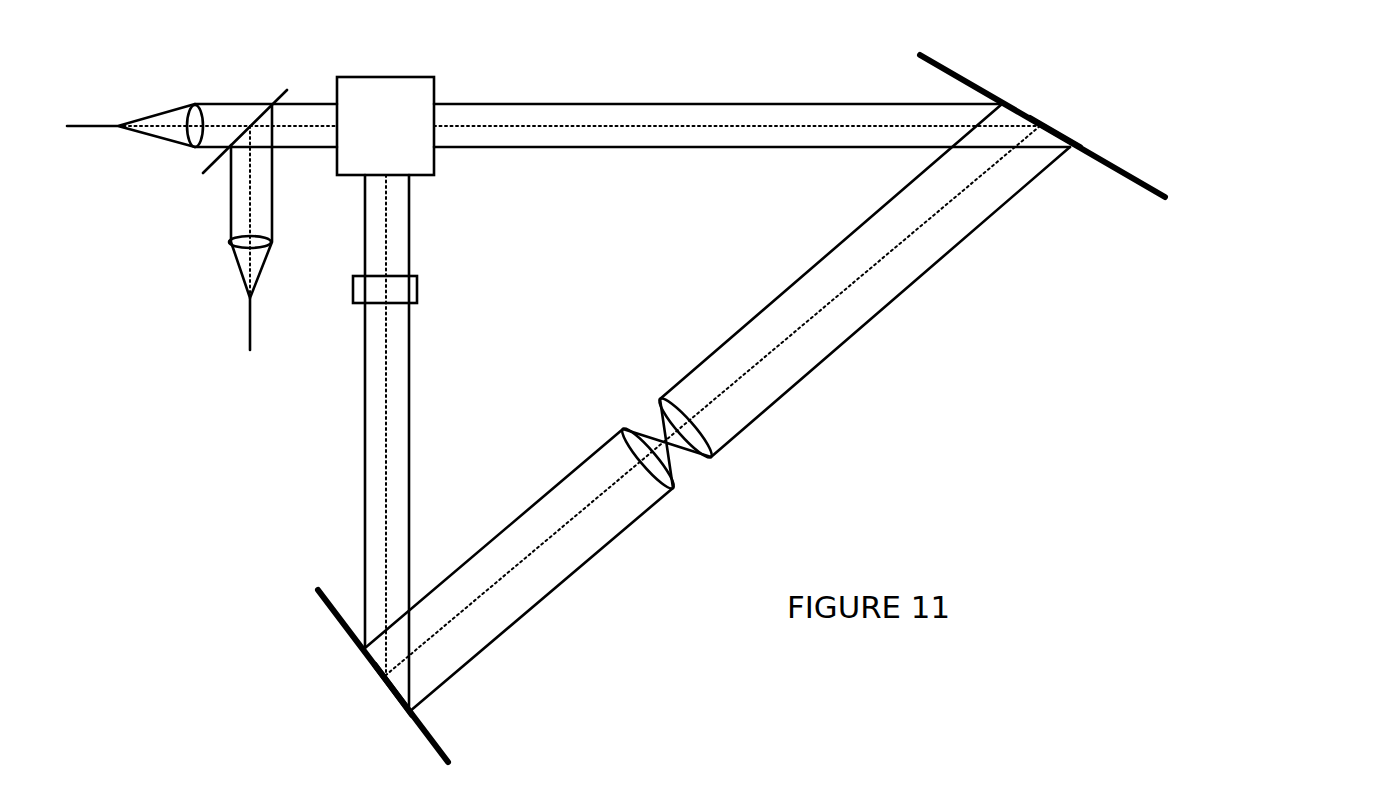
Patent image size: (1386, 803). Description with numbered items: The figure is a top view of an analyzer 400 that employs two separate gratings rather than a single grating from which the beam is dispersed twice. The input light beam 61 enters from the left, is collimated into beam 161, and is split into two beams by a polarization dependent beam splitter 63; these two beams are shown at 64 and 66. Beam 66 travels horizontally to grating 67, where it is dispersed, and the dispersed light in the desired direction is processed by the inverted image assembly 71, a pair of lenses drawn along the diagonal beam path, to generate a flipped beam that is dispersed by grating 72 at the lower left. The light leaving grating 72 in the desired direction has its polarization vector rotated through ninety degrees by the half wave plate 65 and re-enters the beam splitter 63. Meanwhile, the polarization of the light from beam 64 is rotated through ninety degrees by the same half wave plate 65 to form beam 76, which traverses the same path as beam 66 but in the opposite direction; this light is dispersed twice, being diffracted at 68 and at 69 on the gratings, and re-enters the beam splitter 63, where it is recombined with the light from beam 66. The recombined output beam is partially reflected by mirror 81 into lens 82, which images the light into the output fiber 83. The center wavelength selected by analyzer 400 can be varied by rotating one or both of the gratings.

The input light beam 61 is at (88, 148).
The beam 161 is at (192, 104).
The beam 66 is at (504, 140).
The mirror 81 is at (287, 88).
The lens 82 is at (231, 243).
The output fiber 83 is at (249, 336).
The polarization dependent beam splitter 63 is at (418, 177).
The beam 64 is at (367, 225).
The half wave plate 65 is at (355, 287).
The beam 76 is at (368, 403).
The grating 67 is at (952, 68).
The diffraction location 69 is at (1055, 125).
The inverted image assembly 71 is at (737, 463).
The grating 72 is at (318, 592).
The diffraction location 68 is at (392, 690).
The analyzer 400 is at (1322, 145).